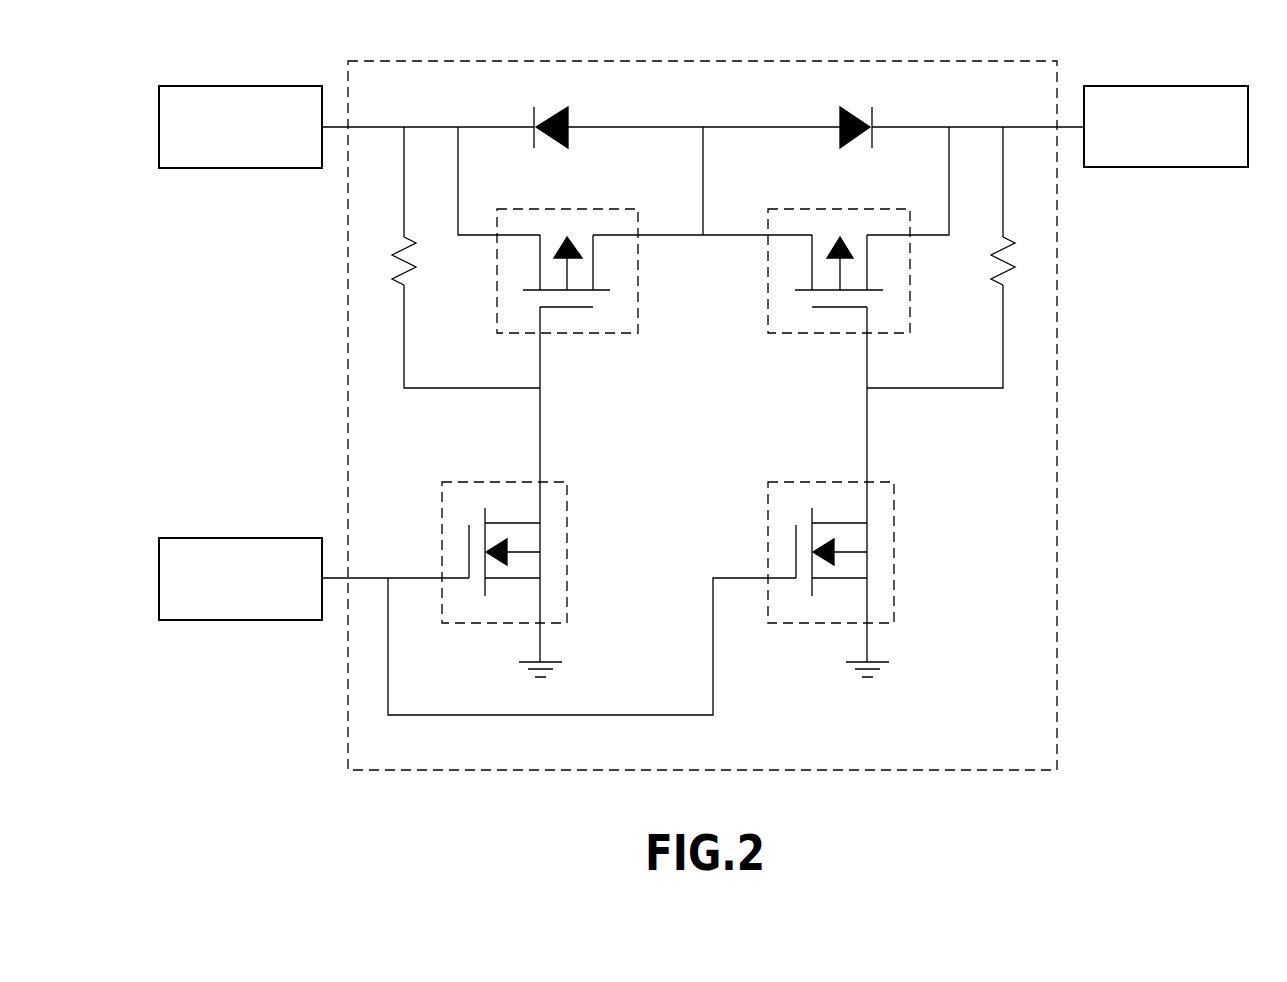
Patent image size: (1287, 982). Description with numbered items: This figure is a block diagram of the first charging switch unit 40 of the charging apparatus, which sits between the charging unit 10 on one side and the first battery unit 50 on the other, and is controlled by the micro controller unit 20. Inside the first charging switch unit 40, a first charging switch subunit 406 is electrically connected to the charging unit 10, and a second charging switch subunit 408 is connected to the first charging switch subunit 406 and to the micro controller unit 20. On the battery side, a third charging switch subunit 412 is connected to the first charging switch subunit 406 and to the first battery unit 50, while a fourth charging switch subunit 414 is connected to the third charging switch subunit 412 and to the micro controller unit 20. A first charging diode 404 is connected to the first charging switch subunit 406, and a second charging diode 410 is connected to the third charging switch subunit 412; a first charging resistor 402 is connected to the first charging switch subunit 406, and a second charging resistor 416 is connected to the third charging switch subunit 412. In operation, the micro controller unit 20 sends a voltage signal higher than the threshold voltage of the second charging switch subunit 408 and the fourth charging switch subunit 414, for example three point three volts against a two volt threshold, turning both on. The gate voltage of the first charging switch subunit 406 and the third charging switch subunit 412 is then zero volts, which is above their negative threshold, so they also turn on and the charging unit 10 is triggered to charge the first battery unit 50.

The charging unit 10 is at (240, 86).
The micro controller unit 20 is at (240, 538).
The first charging switch unit 40 is at (1002, 762).
The first battery unit 50 is at (1167, 86).
The first charging resistor 402 is at (420, 263).
The first charging diode 404 is at (548, 107).
The first charging switch subunit 406 is at (567, 330).
The second charging switch subunit 408 is at (560, 552).
The second charging diode 410 is at (855, 110).
The third charging switch subunit 412 is at (840, 330).
The fourth charging switch subunit 414 is at (887, 552).
The second charging resistor 416 is at (988, 262).